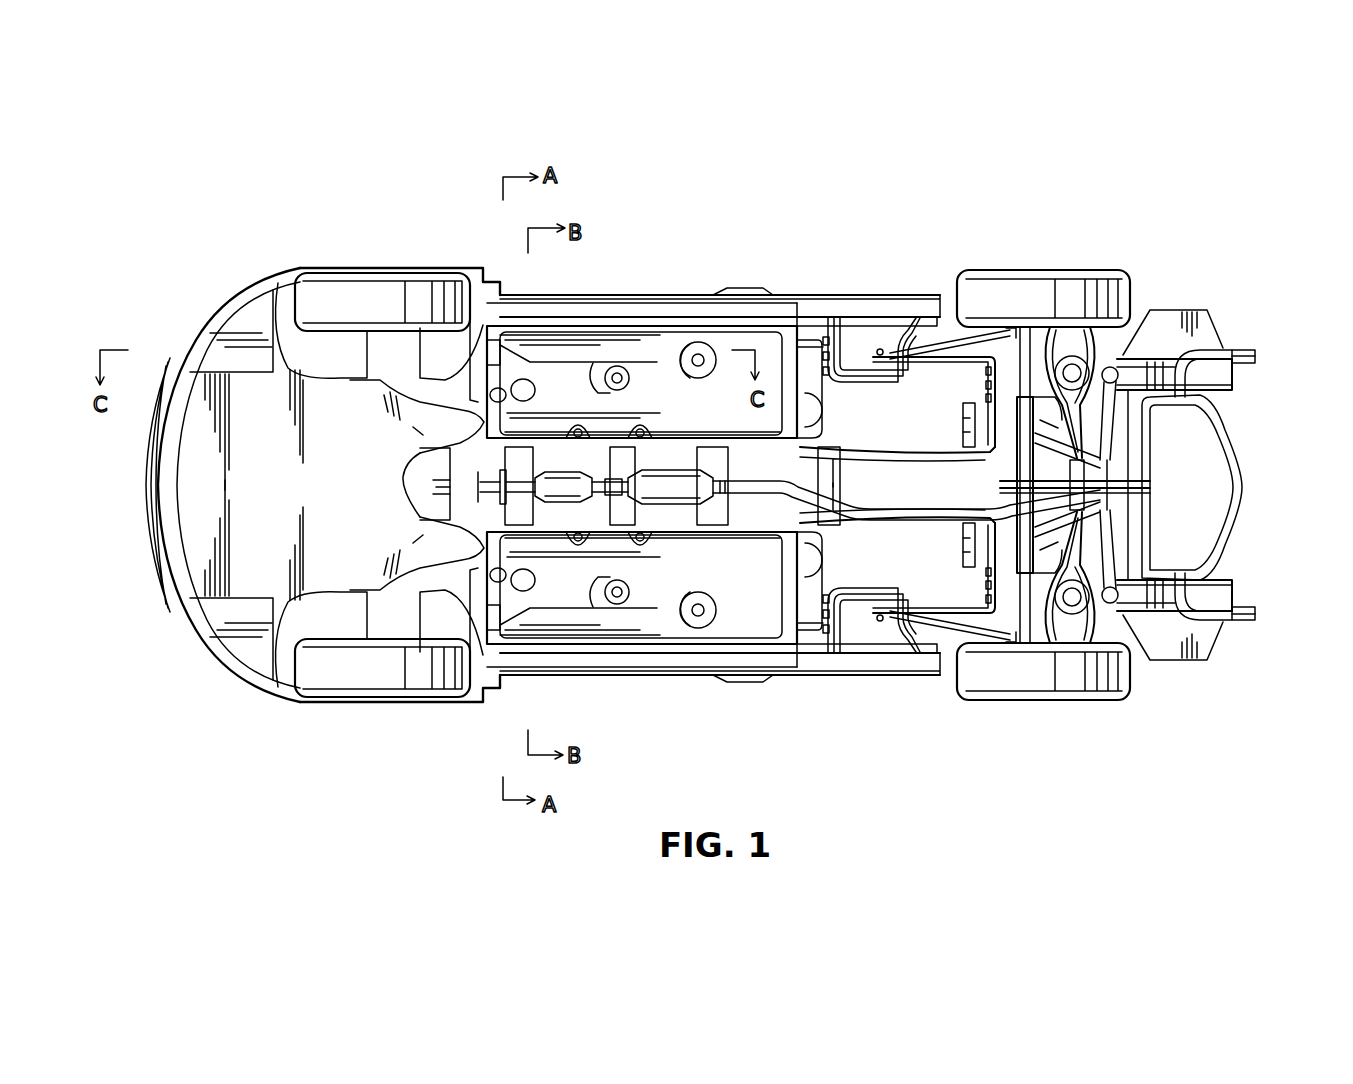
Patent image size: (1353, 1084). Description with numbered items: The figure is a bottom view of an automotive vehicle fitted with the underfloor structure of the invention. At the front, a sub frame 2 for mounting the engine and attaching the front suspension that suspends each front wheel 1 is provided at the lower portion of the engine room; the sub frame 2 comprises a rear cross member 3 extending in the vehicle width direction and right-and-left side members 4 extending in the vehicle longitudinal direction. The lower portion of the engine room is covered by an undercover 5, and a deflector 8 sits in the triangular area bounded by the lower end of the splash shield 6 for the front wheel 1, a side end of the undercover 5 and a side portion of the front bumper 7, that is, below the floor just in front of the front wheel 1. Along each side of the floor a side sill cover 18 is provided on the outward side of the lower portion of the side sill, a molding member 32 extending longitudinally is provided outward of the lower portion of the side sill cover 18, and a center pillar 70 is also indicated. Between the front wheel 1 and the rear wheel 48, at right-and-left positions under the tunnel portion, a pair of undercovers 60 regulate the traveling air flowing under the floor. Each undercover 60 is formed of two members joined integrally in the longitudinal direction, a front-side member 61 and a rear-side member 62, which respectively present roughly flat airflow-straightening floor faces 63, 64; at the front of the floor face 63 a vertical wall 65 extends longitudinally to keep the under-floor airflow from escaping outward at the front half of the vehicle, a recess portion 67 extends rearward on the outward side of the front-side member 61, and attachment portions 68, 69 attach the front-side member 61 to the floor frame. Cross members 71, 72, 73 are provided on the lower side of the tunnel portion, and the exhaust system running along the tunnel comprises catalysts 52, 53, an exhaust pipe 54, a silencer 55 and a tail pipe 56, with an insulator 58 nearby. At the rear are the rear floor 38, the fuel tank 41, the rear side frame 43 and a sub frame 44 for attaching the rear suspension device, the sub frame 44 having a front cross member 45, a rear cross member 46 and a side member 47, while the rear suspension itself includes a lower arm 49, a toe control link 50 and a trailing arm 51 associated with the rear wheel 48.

The front wheel 1 is at (360, 290).
The sub frame 2 is at (406, 395).
The rear cross member 3 is at (403, 480).
The side member 4 is at (378, 445).
The undercover 5 is at (242, 490).
The splash shield 6 is at (298, 365).
The front bumper 7 is at (168, 335).
The deflector 8 is at (249, 308).
The side sill cover 18 is at (616, 295).
The molding member 32 is at (656, 292).
The rear floor 38 is at (1172, 310).
The fuel tank 41 is at (868, 475).
The rear side frame 43 is at (1220, 378).
The sub frame for rear suspension 44 is at (1086, 473).
The front cross member 45 is at (1110, 433).
The rear cross member 46 is at (1090, 508).
The side member 47 is at (1108, 366).
The rear wheel 48 is at (1130, 290).
The lower arm 49 is at (1072, 340).
The toe control link 50 is at (1025, 330).
The trailing arm 51 is at (968, 333).
The catalyst 52 is at (560, 480).
The catalyst 53 is at (667, 476).
The exhaust pipe 54 is at (770, 481).
The silencer 55 is at (1232, 500).
The tail pipe 56 is at (1210, 352).
The insulator 58 is at (936, 520).
The undercover 60 is at (700, 296).
The front-side member 61 is at (778, 295).
The rear-side member 62 is at (860, 295).
The floor face 63 is at (730, 604).
The floor face 64 is at (908, 402).
The vertical wall 65 is at (543, 364).
The recess portion 67 is at (552, 326).
The attachment portion 68 is at (620, 383).
The attachment portion 69 is at (698, 366).
The center pillar 70 is at (740, 288).
The cross member 71 is at (533, 518).
The cross member 72 is at (635, 518).
The cross member 73 is at (728, 513).